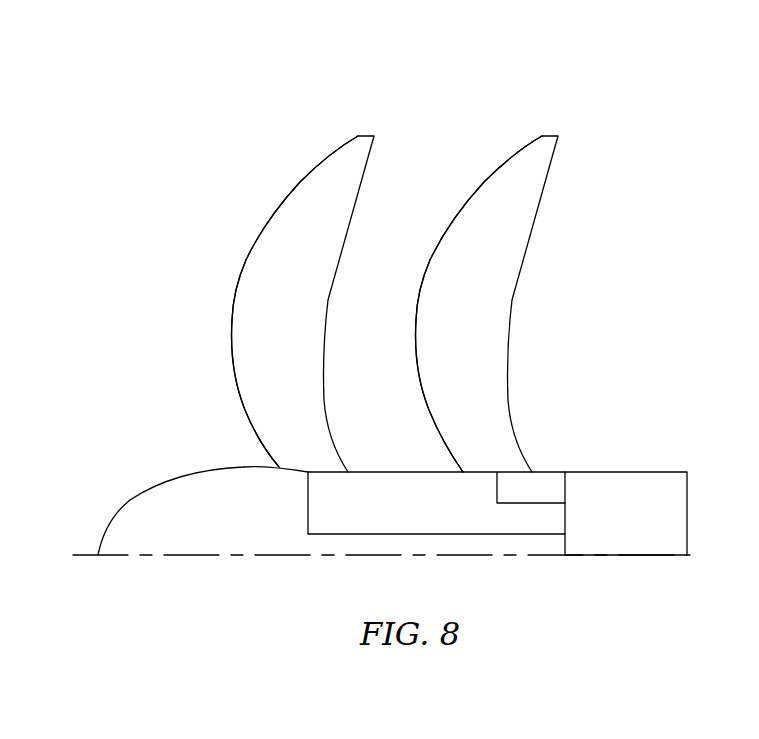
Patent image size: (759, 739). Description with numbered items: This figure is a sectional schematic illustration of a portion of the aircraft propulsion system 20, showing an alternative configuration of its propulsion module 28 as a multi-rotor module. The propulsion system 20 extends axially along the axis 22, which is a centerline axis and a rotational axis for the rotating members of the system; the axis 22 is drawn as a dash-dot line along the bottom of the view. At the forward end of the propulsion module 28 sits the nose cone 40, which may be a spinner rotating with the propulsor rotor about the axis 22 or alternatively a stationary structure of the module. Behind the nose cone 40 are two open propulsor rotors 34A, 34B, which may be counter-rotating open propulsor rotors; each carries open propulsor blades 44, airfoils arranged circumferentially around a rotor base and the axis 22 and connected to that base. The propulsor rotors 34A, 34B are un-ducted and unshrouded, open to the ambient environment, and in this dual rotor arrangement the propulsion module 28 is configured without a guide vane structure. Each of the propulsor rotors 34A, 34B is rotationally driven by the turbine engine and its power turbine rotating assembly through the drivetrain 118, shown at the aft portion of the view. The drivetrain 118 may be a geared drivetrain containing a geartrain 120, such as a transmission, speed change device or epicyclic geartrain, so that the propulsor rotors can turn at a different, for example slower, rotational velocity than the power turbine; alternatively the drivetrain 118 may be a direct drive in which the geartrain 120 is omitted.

The aircraft propulsion system 20 is at (151, 187).
The axis 22 is at (85, 556).
The propulsion module 28 is at (620, 146).
The propulsor rotor 34A is at (280, 194).
The propulsor rotor 34B is at (462, 194).
The nose cone 40 is at (155, 494).
The propulsor blades 44 is at (231, 325).
The drivetrain 118 is at (650, 459).
The geartrain 120 is at (606, 524).